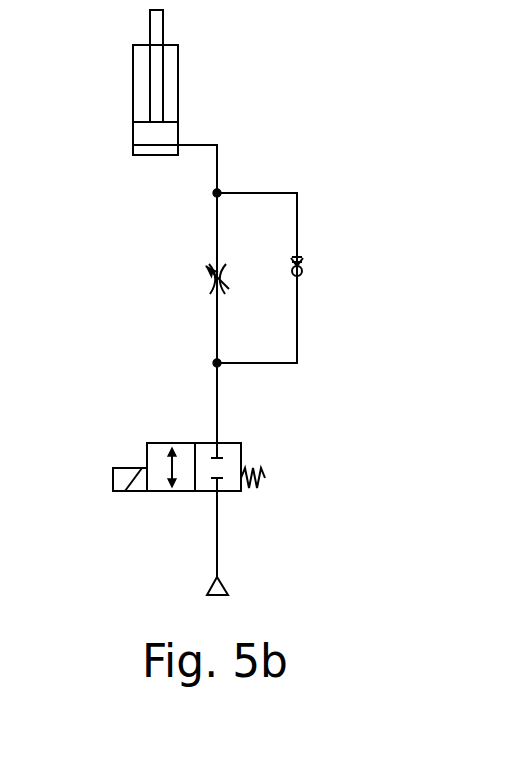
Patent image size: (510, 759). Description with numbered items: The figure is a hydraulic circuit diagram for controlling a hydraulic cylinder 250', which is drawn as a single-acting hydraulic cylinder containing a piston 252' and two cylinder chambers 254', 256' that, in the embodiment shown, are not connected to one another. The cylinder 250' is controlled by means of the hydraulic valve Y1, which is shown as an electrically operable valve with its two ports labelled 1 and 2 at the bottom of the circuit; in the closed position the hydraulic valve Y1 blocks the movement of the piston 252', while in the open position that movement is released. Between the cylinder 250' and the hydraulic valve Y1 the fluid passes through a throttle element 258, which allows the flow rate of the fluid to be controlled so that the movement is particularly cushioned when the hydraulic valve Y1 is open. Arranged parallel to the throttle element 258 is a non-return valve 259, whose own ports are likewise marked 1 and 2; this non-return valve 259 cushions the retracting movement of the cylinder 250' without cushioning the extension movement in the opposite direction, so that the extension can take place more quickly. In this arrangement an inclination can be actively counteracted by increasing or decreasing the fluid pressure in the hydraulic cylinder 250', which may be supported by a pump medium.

The hydraulic cylinder 250' is at (156, 132).
The piston 252' is at (100, 114).
The cylinder chamber 254' is at (142, 200).
The cylinder chamber 256' is at (211, 82).
The throttle element 258 is at (205, 284).
The non-return valve 259 is at (309, 282).
The hydraulic valve Y1 is at (167, 469).
The port 1 is at (237, 506).
The port 2 is at (236, 433).